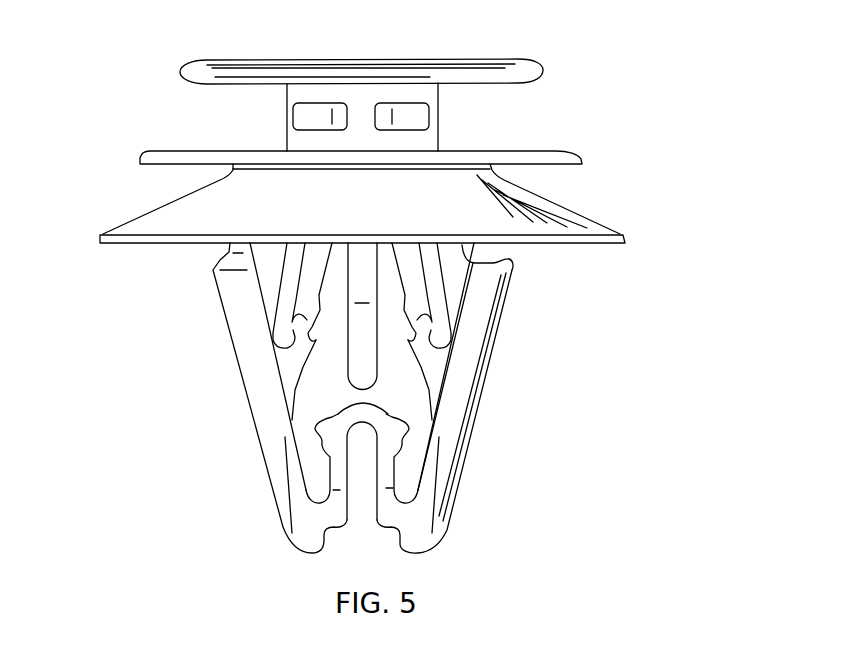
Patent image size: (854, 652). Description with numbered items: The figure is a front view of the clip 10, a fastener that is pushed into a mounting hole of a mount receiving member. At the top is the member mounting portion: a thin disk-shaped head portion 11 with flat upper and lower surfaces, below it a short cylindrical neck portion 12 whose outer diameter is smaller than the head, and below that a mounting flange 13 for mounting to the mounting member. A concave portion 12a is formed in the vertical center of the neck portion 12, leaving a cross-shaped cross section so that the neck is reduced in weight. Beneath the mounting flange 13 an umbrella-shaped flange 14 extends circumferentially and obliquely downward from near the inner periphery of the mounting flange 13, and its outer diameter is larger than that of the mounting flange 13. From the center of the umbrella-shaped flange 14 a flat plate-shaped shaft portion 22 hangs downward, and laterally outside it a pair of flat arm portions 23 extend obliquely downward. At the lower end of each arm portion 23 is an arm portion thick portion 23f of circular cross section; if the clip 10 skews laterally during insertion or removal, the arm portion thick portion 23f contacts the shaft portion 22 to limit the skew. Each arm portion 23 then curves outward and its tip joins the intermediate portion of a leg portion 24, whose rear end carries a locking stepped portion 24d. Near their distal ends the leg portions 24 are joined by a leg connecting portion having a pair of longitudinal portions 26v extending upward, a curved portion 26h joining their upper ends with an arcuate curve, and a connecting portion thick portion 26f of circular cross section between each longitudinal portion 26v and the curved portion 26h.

The clip 10 is at (602, 54).
The head portion 11 is at (208, 70).
The neck portion 12 is at (438, 81).
The concave portion 12a is at (423, 117).
The mounting flange 13 is at (550, 148).
The umbrella-shaped flange 14 is at (130, 223).
The shaft portion 22 is at (350, 352).
The arm portion 23 is at (410, 285).
The arm portion thick portion 23f is at (307, 321).
The leg portion 24 is at (477, 332).
The locking stepped portion 24d is at (513, 257).
The connecting portion thick portion 26f is at (340, 417).
The curved portion 26h is at (370, 400).
The longitudinal portion 26v is at (390, 473).